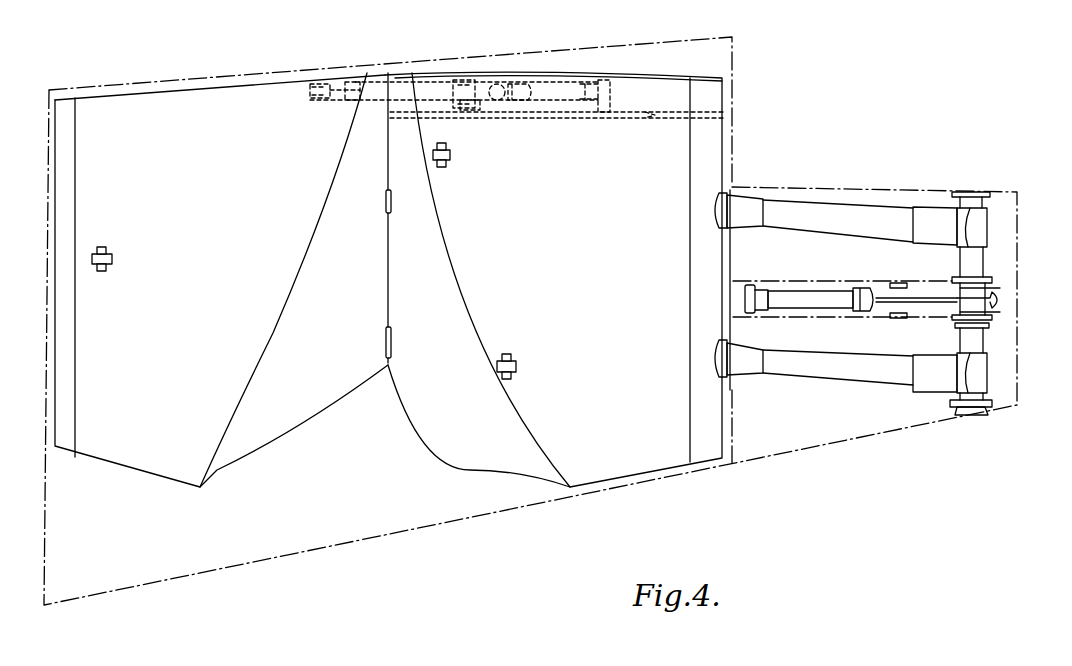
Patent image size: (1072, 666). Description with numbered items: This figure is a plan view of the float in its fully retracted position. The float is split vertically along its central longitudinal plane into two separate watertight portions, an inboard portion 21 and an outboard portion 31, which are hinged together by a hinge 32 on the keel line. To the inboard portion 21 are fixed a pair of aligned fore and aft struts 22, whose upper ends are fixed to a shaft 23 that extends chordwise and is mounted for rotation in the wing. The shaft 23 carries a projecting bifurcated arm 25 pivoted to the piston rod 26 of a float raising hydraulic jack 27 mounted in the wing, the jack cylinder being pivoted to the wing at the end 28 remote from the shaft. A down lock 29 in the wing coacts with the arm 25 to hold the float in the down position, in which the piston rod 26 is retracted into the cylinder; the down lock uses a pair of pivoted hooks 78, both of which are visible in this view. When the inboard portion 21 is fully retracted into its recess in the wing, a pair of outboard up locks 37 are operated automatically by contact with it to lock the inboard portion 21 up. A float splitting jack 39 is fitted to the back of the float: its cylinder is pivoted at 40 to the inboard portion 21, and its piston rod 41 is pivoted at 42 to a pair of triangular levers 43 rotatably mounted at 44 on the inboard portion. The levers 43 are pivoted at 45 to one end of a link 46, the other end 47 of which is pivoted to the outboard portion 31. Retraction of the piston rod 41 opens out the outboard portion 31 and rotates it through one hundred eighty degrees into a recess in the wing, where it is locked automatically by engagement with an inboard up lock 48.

The inboard portion of the float 21 is at (578, 276).
The outboard portion of the float 31 is at (191, 291).
The struts 22 is at (822, 232).
The shaft 23 is at (985, 263).
The bifurcated arm 25 is at (1002, 306).
The piston rod 26 is at (941, 302).
The float raising hydraulic jack 27 is at (806, 310).
The end of the cylinder 28 is at (748, 285).
The down lock 29 is at (908, 283).
The pivoted hooks 78 is at (893, 284).
The hinge 32 is at (392, 206).
The outboard up locks 37 is at (452, 157).
The inboard up lock 48 is at (112, 254).
The float splitting jack 39 is at (560, 103).
The pivot of the jack cylinder 40 is at (607, 112).
The piston rod 41 is at (515, 83).
The pivot 42 is at (496, 85).
The triangular levers 43 is at (455, 80).
The pivot mounting of the levers 44 is at (472, 105).
The pivot of the link 45 is at (350, 98).
The link 46 is at (344, 97).
The other end of the link 47 is at (308, 98).